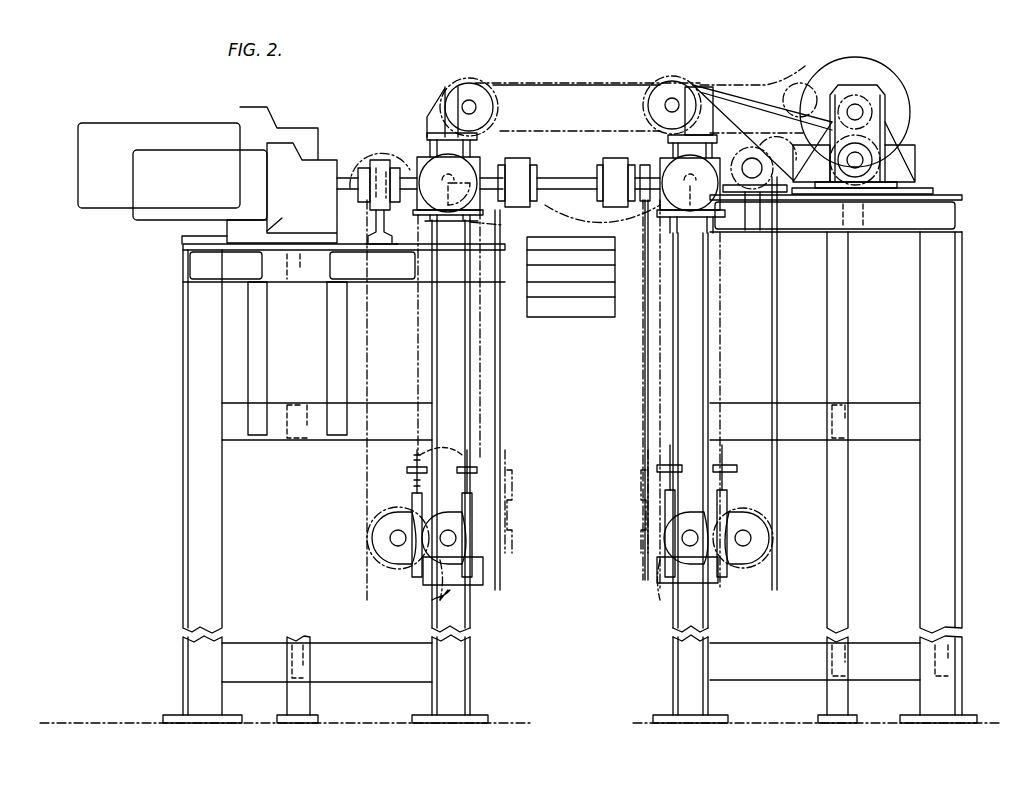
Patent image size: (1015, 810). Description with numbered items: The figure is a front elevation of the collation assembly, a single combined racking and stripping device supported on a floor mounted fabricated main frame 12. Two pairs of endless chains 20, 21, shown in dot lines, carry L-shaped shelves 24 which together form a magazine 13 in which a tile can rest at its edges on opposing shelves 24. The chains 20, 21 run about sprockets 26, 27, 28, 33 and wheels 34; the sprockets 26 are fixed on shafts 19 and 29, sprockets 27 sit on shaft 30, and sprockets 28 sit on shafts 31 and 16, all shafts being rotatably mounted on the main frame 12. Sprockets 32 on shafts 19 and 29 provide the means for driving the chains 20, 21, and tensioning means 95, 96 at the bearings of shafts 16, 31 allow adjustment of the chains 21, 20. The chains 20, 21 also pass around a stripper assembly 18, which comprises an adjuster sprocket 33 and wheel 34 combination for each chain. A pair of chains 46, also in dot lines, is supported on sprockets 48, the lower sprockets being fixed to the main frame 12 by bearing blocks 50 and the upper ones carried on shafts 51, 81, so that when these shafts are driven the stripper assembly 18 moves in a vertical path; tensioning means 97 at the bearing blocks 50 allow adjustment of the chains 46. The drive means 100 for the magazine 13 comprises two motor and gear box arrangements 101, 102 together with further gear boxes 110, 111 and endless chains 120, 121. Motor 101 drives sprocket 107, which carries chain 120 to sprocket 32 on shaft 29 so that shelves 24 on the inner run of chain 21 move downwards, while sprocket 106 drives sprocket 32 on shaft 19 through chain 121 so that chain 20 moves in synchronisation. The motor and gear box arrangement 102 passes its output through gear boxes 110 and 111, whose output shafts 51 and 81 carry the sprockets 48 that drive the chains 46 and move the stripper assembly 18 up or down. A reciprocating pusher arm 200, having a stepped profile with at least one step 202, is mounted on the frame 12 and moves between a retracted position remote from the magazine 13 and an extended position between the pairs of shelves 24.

The drive means 100 is at (746, 40).
The motor and gear box arrangement 101 is at (95, 130).
The motor and gear box arrangement 102 is at (150, 213).
The sprocket 106 is at (875, 162).
The sprocket 107 is at (870, 110).
The gear box 110 is at (425, 158).
The gear box 111 is at (648, 165).
The endless chain 120 is at (606, 84).
The endless chain 121 is at (740, 95).
The main frame 12 is at (183, 541).
The magazine 13 is at (570, 356).
The shaft 16 is at (390, 538).
The stripper assembly 18 is at (391, 594).
The shaft 19 is at (668, 106).
The endless chains 20 is at (778, 287).
The endless chains 21 is at (363, 349).
The shelves 24 is at (505, 560).
The sprockets 26 is at (480, 82).
The sprockets 27 is at (382, 153).
The sprockets 28 is at (380, 560).
The shaft 29 is at (478, 108).
The shaft 30 is at (770, 190).
The shaft 31 is at (745, 545).
The sprockets 32 is at (492, 94).
The adjuster sprocket 33 is at (470, 450).
The wheel 34 is at (490, 575).
The chains 46 is at (418, 358).
The sprockets 48 is at (580, 188).
The bearing blocks 50 is at (452, 556).
The shaft 51 is at (452, 240).
The shaft 81 is at (688, 240).
The tensioning means 95 is at (410, 480).
The tensioning means 96 is at (735, 475).
The tensioning means 97 is at (470, 472).
The pusher arm 200 is at (606, 328).
The step 202 is at (542, 305).